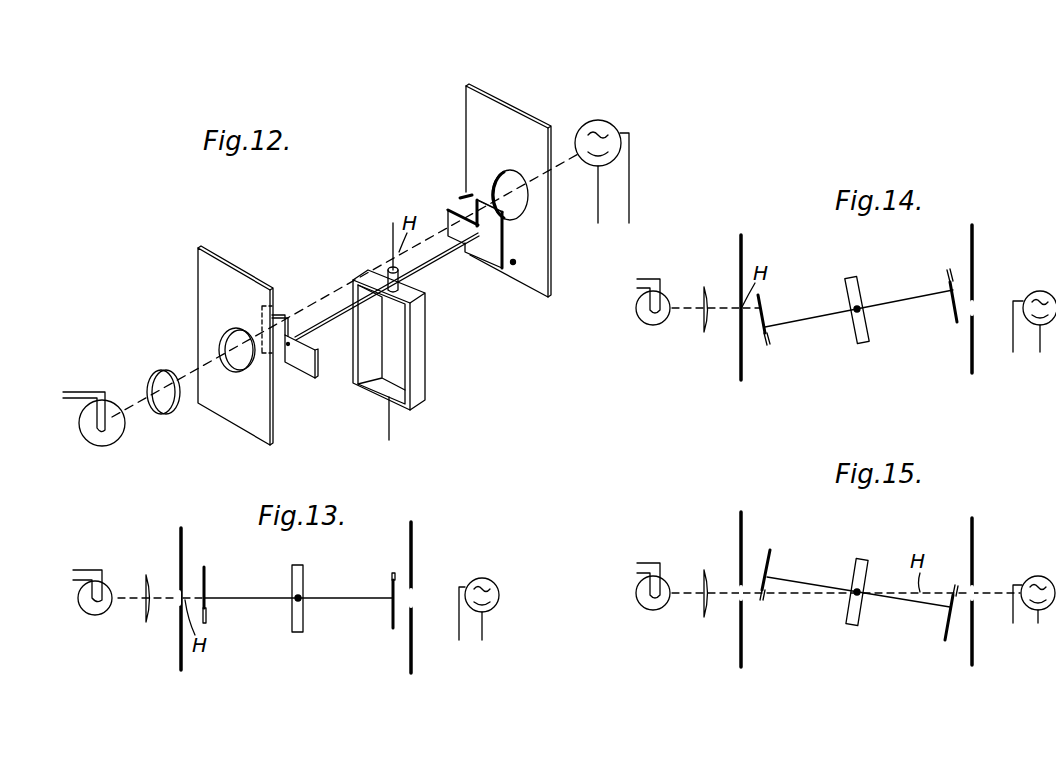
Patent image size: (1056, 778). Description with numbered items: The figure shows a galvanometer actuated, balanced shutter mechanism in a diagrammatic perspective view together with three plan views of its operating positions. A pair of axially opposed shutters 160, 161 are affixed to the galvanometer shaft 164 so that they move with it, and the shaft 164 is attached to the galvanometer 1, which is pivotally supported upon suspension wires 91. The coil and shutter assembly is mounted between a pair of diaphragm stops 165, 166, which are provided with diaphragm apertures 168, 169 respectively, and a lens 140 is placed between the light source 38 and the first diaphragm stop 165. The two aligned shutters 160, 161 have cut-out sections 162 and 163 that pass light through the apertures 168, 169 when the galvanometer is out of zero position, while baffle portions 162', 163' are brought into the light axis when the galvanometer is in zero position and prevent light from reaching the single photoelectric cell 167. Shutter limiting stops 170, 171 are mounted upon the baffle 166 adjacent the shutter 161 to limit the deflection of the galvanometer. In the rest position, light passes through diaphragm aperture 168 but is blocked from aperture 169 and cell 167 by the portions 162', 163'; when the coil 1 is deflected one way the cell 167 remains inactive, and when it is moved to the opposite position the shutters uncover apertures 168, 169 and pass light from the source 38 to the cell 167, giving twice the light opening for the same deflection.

In FIG. 12, the galvanometer 1 is at (423, 357).
In FIG. 13, the galvanometer 1 is at (305, 580).
In FIG. 14, the galvanometer 1 is at (862, 287).
In FIG. 15, the galvanometer 1 is at (862, 573).
In FIG. 12, the light source 38 is at (88, 437).
In FIG. 13, the light source 38 is at (97, 616).
In FIG. 14, the light source 38 is at (647, 323).
In FIG. 15, the light source 38 is at (647, 610).
In FIG. 12, the suspension wires 91 is at (392, 240).
In FIG. 12, the condensing lens 140 is at (172, 412).
In FIG. 13, the condensing lens 140 is at (148, 622).
In FIG. 14, the condensing lens 140 is at (708, 332).
In FIG. 15, the condensing lens 140 is at (708, 617).
In FIG. 12, the shutter 160 is at (291, 365).
In FIG. 13, the shutter 160 is at (207, 575).
In FIG. 14, the shutter 160 is at (762, 298).
In FIG. 15, the shutter 160 is at (770, 558).
In FIG. 12, the shutter 161 is at (492, 253).
In FIG. 13, the shutter 161 is at (389, 615).
In FIG. 14, the shutter 161 is at (948, 312).
In FIG. 15, the shutter 161 is at (945, 625).
In FIG. 12, the cut-out section 162 is at (304, 303).
In FIG. 12, the baffle portion 162' is at (288, 299).
In FIG. 12, the cut-out section 163 is at (447, 205).
In FIG. 12, the baffle portion 163' is at (542, 241).
In FIG. 12, the galvanometer shaft 164 is at (435, 262).
In FIG. 13, the galvanometer shaft 164 is at (335, 600).
In FIG. 14, the galvanometer shaft 164 is at (822, 315).
In FIG. 15, the galvanometer shaft 164 is at (888, 602).
In FIG. 12, the diaphragm stop 165 is at (262, 422).
In FIG. 13, the diaphragm stop 165 is at (178, 550).
In FIG. 14, the diaphragm stop 165 is at (738, 258).
In FIG. 15, the diaphragm stop 165 is at (738, 537).
In FIG. 12, the diaphragm stop 166 is at (537, 230).
In FIG. 14, the diaphragm stop 166 is at (973, 248).
In FIG. 15, the diaphragm stop 166 is at (975, 537).
In FIG. 12, the photoelectric cell 167 is at (617, 143).
In FIG. 13, the photoelectric cell 167 is at (498, 588).
In FIG. 14, the photoelectric cell 167 is at (1030, 327).
In FIG. 15, the photoelectric cell 167 is at (1030, 608).
In FIG. 12, the diaphragm aperture 168 is at (215, 330).
In FIG. 13, the diaphragm aperture 168 is at (183, 583).
In FIG. 15, the diaphragm aperture 168 is at (743, 583).
In FIG. 12, the diaphragm aperture 169 is at (512, 172).
In FIG. 13, the diaphragm aperture 169 is at (413, 590).
In FIG. 14, the diaphragm aperture 169 is at (975, 300).
In FIG. 15, the diaphragm aperture 169 is at (973, 583).
In FIG. 12, the shutter limiting stop 170 is at (515, 265).
In FIG. 12, the shutter limiting stop 171 is at (462, 197).